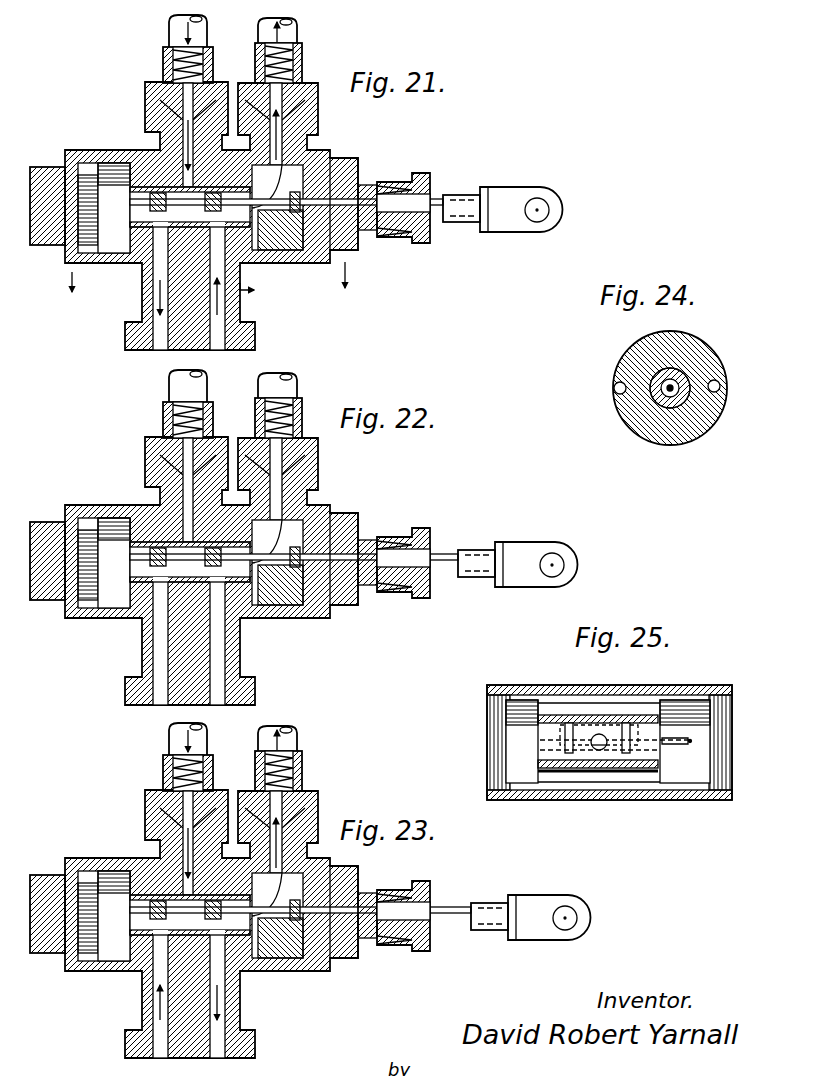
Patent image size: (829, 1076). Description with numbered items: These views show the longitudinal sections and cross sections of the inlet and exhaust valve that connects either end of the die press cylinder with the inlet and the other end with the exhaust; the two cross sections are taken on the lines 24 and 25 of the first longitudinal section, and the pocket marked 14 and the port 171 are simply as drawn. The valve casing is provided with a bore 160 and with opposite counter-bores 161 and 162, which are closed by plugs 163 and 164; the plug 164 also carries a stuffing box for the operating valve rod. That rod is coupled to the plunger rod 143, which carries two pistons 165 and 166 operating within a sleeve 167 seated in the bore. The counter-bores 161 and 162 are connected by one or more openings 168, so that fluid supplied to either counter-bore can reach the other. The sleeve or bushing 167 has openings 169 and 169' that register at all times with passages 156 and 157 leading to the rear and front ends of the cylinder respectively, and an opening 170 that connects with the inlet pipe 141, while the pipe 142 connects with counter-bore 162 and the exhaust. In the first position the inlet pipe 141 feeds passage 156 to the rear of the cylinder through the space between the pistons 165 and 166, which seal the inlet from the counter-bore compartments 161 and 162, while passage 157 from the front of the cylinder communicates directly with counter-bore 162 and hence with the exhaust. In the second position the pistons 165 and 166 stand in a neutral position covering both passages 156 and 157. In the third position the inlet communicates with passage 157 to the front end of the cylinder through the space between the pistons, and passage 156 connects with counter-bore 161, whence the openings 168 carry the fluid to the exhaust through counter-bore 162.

In FIG. 21, the pocket 14 is at (248, 143).
In FIG. 21, the section line 24— 24 is at (259, 291).
In FIG. 21, the section line 25— 25 is at (209, 289).
In FIG. 21, the inlet pipe 141 is at (170, 31).
In FIG. 22, the inlet pipe 141 is at (170, 386).
In FIG. 23, the inlet pipe 141 is at (172, 732).
In FIG. 21, the pipe 142 is at (298, 32).
In FIG. 22, the pipe 142 is at (298, 385).
In FIG. 23, the pipe 142 is at (298, 735).
In FIG. 21, the plunger rod 143 is at (260, 226).
In FIG. 22, the plunger rod 143 is at (262, 575).
In FIG. 23, the plunger rod 143 is at (268, 918).
In FIG. 24, the plunger rod 143 is at (683, 380).
In FIG. 25, the plunger rod 143 is at (668, 746).
In FIG. 21, the passage 156 is at (156, 338).
In FIG. 21, the passage 157 is at (222, 340).
In FIG. 21, the bore 160 is at (150, 162).
In FIG. 22, the bore 160 is at (160, 520).
In FIG. 21, the counter-bore 161 is at (115, 162).
In FIG. 22, the counter-bore 161 is at (117, 516).
In FIG. 23, the counter-bore 161 is at (120, 868).
In FIG. 21, the counter-bore 162 is at (368, 160).
In FIG. 22, the counter-bore 162 is at (370, 510).
In FIG. 23, the counter-bore 162 is at (378, 872).
In FIG. 21, the plug 163 is at (58, 167).
In FIG. 22, the plug 163 is at (58, 523).
In FIG. 23, the plug 163 is at (55, 876).
In FIG. 21, the plug 164 is at (365, 183).
In FIG. 22, the plug 164 is at (395, 528).
In FIG. 23, the plug 164 is at (372, 892).
In FIG. 21, the piston 165 is at (142, 212).
In FIG. 22, the piston 165 is at (152, 560).
In FIG. 23, the piston 165 is at (150, 915).
In FIG. 21, the piston 166 is at (150, 258).
In FIG. 22, the piston 166 is at (248, 618).
In FIG. 23, the piston 166 is at (245, 965).
In FIG. 21, the sleeve 167 is at (112, 263).
In FIG. 22, the sleeve 167 is at (115, 615).
In FIG. 23, the sleeve 167 is at (118, 965).
In FIG. 24, the sleeve 167 is at (690, 402).
In FIG. 25, the sleeve 167 is at (555, 790).
In FIG. 24, the openings 168 is at (617, 392).
In FIG. 25, the openings 168 is at (615, 707).
In FIG. 21, the opening 169 is at (128, 274).
In FIG. 25, the opening 169 is at (545, 704).
In FIG. 21, the opening 169' is at (268, 258).
In FIG. 25, the opening 169' is at (664, 701).
In FIG. 21, the opening 170 is at (222, 118).
In FIG. 22, the opening 170 is at (194, 548).
In FIG. 23, the opening 170 is at (162, 848).
In FIG. 25, the opening 170 is at (598, 752).
In FIG. 22, the port 171 is at (165, 603).